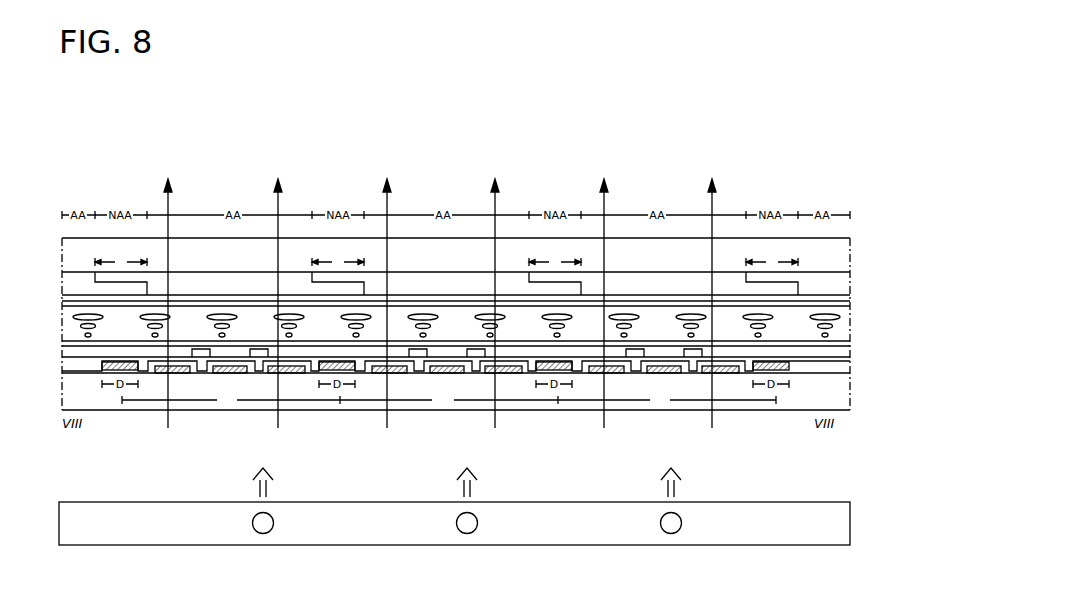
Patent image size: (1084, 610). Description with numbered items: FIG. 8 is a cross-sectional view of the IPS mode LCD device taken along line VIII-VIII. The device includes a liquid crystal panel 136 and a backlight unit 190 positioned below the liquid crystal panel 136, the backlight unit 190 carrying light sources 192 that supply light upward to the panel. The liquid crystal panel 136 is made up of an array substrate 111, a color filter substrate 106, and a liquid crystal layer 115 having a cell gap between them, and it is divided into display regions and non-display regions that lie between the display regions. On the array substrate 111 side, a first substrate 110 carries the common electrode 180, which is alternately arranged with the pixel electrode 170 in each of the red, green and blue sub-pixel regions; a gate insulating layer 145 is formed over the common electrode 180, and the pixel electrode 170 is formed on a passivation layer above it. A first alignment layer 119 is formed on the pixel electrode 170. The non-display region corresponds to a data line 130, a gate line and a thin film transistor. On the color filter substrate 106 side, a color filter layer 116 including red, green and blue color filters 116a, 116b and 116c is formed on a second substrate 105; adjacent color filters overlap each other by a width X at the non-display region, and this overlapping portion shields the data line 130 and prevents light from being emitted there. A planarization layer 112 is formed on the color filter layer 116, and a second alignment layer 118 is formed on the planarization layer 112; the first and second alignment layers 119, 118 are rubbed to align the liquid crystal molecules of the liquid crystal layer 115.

The second substrate 105 is at (816, 260).
The color filter substrate 106 is at (853, 238).
The first substrate 110 is at (819, 402).
The array substrate 111 is at (853, 345).
The planarization layer 112 is at (518, 299).
The liquid crystal layer 115 is at (853, 308).
The color filter layer 116 is at (420, 116).
The red color filter 116a is at (255, 278).
The green color filter 116b is at (463, 283).
The blue color filter 116c is at (638, 280).
The upper alignment layer 118 is at (250, 306).
The first alignment layer 119 is at (782, 346).
The data line 130 is at (136, 370).
The liquid crystal panel 136 is at (897, 273).
The gate insulating layer 145 is at (255, 372).
The pixel electrode 170 is at (206, 349).
The common electrode 180 is at (180, 373).
The backlight unit 190 is at (840, 523).
The light source 192 is at (263, 526).